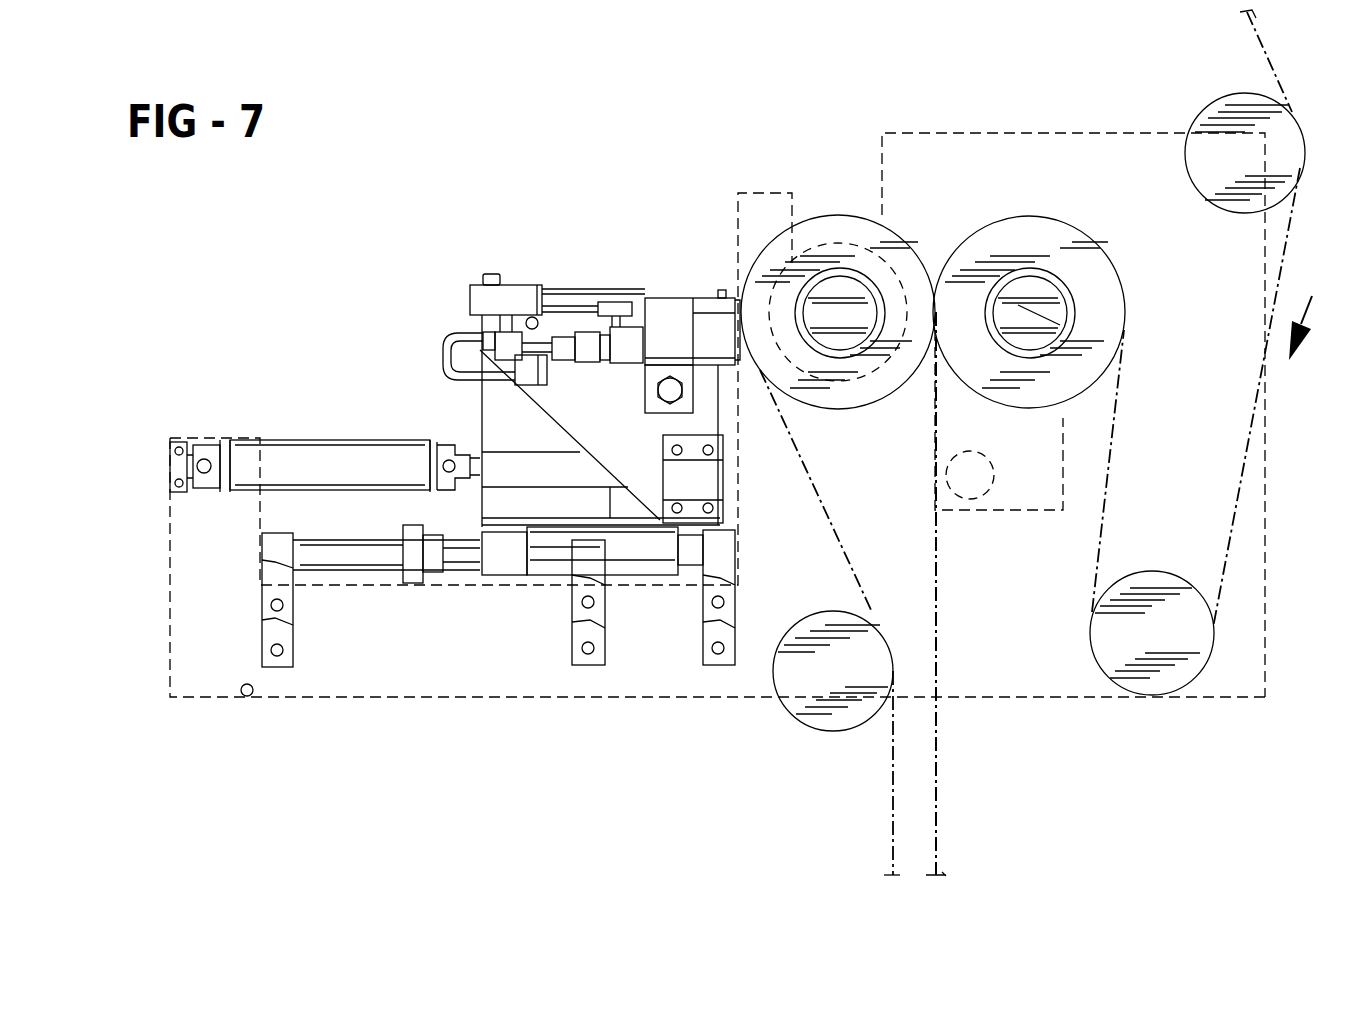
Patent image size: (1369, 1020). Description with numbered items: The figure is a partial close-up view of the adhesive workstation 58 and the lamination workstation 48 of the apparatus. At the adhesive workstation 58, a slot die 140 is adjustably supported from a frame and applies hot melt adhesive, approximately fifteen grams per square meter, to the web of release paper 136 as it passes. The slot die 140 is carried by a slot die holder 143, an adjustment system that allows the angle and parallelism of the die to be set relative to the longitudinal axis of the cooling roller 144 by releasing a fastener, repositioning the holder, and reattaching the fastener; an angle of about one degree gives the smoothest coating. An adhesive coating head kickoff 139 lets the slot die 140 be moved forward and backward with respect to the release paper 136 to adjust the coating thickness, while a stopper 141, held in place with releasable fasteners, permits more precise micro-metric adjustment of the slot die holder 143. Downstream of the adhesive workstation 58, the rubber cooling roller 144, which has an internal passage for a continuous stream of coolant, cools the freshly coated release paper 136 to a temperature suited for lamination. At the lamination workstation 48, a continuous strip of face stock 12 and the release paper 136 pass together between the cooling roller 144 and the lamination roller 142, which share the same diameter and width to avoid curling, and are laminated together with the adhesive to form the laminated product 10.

The laminated product 10 is at (936, 772).
The face stock 12 is at (1237, 510).
The lamination workstation 48 is at (936, 123).
The adhesive workstation 58 is at (438, 203).
The release paper 136 is at (818, 508).
The adhesive coating head kickoff 139 is at (305, 462).
The slot die 140 is at (708, 328).
The stopper 141 is at (598, 667).
The lamination roller 142 is at (1019, 244).
The slot die holder 143 is at (605, 413).
The cooling roller 144 is at (832, 257).